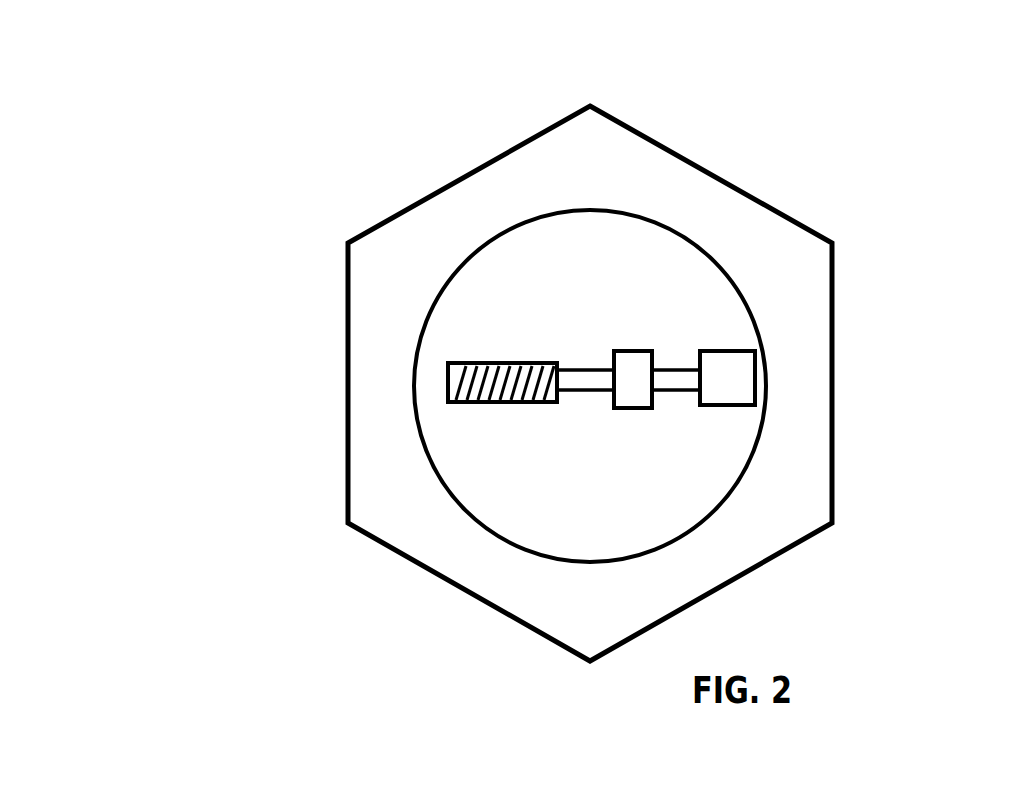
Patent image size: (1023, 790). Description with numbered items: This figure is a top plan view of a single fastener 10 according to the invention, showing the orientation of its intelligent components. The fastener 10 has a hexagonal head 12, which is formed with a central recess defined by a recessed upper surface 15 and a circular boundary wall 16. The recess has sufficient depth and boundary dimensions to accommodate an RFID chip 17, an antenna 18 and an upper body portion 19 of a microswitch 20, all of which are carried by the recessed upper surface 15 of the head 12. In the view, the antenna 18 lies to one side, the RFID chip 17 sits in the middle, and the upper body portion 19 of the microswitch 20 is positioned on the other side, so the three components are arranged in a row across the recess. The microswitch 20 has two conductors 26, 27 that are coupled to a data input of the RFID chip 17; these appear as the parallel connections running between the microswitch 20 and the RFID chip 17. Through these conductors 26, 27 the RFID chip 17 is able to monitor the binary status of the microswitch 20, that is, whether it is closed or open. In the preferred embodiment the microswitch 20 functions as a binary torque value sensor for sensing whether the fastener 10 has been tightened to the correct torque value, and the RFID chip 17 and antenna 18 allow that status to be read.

The fastener 10 is at (506, 369).
The head 12 is at (438, 172).
The recessed upper surface 15 is at (590, 304).
The boundary wall 16 is at (543, 215).
The RFID chip 17 is at (635, 382).
The antenna 18 is at (464, 365).
The upper body portion 19 is at (735, 395).
The microswitch 20 is at (758, 335).
The conductor 26 is at (673, 368).
The conductor 27 is at (668, 392).